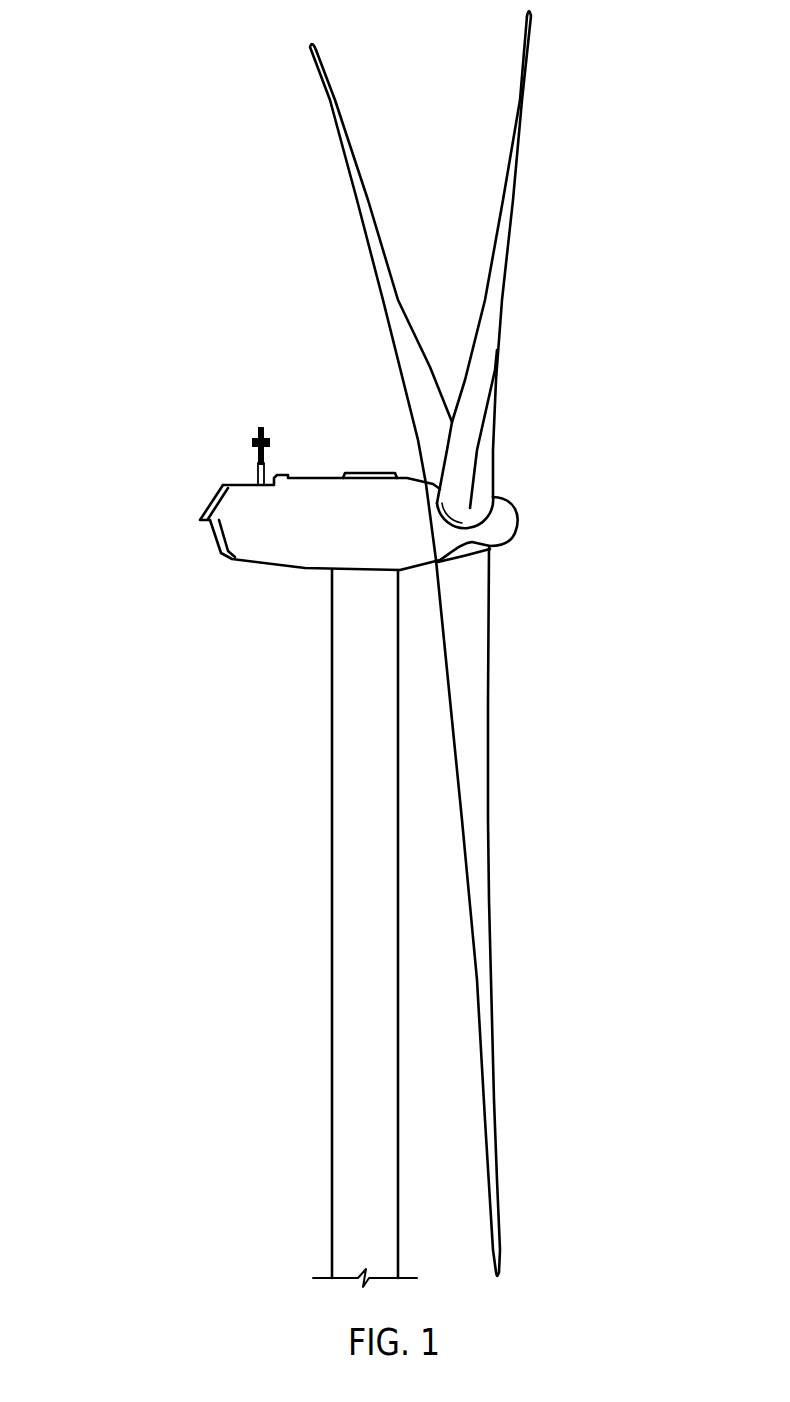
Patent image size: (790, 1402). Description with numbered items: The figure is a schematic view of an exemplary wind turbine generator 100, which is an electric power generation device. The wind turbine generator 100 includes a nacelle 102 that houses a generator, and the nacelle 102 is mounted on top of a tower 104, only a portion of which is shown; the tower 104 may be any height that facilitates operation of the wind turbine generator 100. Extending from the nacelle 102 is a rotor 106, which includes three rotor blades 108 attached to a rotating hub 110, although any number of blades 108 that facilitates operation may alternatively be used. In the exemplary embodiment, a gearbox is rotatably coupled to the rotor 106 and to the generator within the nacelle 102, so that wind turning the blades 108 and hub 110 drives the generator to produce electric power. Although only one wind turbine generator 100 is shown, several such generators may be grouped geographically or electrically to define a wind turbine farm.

The wind turbine generator 100 is at (120, 71).
The nacelle 102 is at (241, 572).
The tower 104 is at (330, 900).
The rotor 106 is at (574, 196).
The rotor blade 108 is at (330, 89).
The rotating hub 110 is at (517, 523).